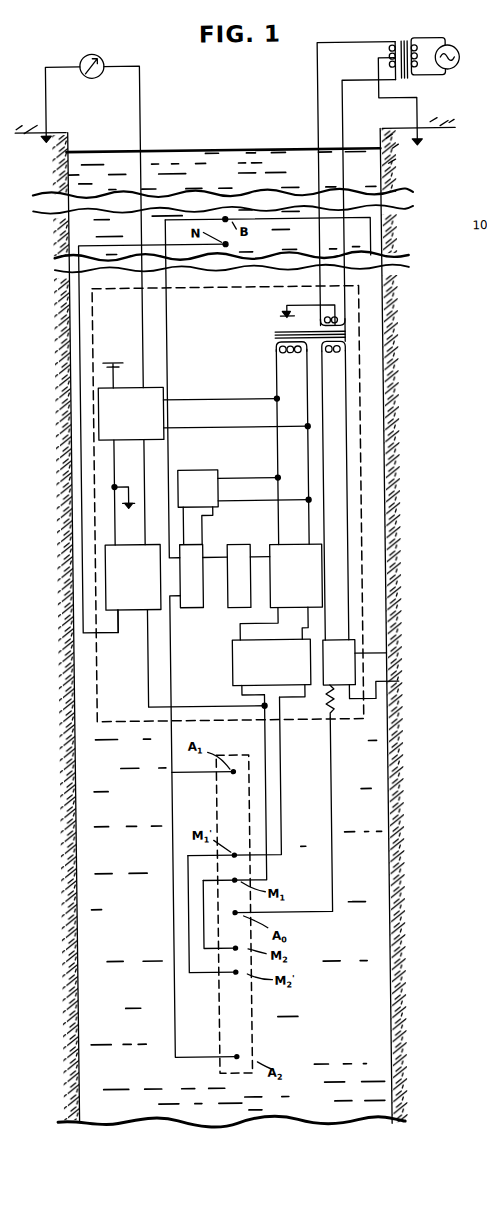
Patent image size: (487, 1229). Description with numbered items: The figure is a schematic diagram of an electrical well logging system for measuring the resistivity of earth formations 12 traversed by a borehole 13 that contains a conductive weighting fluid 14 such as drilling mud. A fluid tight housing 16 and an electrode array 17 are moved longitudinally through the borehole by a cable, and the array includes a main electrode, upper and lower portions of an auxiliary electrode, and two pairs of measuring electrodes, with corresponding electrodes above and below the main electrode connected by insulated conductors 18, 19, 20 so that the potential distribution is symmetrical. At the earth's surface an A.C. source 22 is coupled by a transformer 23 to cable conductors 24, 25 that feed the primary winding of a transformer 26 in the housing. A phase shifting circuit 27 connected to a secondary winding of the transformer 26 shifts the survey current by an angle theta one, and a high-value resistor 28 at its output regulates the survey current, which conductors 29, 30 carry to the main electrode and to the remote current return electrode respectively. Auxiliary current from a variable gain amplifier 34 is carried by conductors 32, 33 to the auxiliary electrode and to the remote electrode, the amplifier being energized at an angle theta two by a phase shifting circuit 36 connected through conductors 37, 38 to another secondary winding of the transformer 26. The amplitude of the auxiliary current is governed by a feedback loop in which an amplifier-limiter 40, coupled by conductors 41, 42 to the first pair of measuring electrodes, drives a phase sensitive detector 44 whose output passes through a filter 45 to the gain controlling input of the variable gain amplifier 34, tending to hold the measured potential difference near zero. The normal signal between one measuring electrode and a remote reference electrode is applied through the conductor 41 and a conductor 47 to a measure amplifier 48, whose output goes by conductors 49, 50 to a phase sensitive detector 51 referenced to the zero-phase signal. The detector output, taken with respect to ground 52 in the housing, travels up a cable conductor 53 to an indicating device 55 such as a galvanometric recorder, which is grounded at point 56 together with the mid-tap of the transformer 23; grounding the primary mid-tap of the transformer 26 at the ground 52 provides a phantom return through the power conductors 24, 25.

The earth formations 12 is at (410, 789).
The borehole 13 is at (386, 875).
The conductive weighting fluid 14 is at (337, 1048).
The fluid tight housing 16 is at (370, 477).
The electrode array 17 is at (211, 1012).
The insulated conductor 18 is at (170, 888).
The insulated conductor 19 is at (199, 888).
The insulated conductor 20 is at (185, 930).
The A.C. source 22 is at (467, 54).
The transformer 23 is at (408, 40).
The cable conductor 24 is at (378, 42).
The cable conductor 25 is at (363, 79).
The transformer 26 is at (290, 333).
The phase shifting circuit 27 is at (386, 654).
The resistor 28 is at (333, 722).
The conductor 29 is at (329, 790).
The conductor 30 is at (398, 683).
The conductor 32 is at (173, 632).
The conductor 33 is at (171, 322).
The variable gain amplifier 34 is at (197, 609).
The phase shifting circuit 36 is at (188, 469).
The conductor 37 is at (278, 441).
The conductor 38 is at (309, 452).
The amplifier-limiter 40 is at (232, 672).
The conductor 41 is at (264, 783).
The conductor 42 is at (279, 752).
The phase sensitive detector 44 is at (274, 543).
The filter 45 is at (243, 543).
The conductor 47 is at (111, 637).
The measure amplifier 48 is at (106, 583).
The conductor 49 is at (116, 478).
The conductor 50 is at (146, 458).
The phase sensitive detector 51 is at (101, 423).
The ground 52 is at (115, 358).
The cable conductor 53 is at (149, 118).
The indicating device 55 is at (107, 54).
The ground point 56 is at (50, 141).